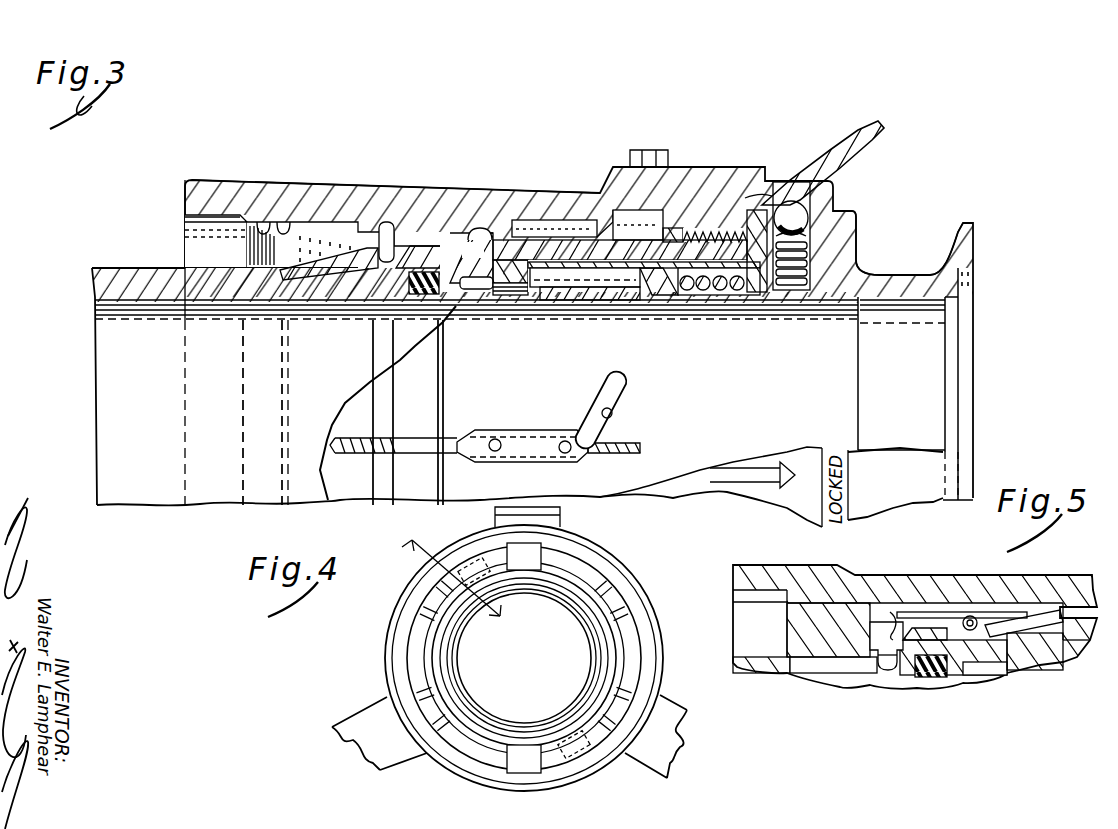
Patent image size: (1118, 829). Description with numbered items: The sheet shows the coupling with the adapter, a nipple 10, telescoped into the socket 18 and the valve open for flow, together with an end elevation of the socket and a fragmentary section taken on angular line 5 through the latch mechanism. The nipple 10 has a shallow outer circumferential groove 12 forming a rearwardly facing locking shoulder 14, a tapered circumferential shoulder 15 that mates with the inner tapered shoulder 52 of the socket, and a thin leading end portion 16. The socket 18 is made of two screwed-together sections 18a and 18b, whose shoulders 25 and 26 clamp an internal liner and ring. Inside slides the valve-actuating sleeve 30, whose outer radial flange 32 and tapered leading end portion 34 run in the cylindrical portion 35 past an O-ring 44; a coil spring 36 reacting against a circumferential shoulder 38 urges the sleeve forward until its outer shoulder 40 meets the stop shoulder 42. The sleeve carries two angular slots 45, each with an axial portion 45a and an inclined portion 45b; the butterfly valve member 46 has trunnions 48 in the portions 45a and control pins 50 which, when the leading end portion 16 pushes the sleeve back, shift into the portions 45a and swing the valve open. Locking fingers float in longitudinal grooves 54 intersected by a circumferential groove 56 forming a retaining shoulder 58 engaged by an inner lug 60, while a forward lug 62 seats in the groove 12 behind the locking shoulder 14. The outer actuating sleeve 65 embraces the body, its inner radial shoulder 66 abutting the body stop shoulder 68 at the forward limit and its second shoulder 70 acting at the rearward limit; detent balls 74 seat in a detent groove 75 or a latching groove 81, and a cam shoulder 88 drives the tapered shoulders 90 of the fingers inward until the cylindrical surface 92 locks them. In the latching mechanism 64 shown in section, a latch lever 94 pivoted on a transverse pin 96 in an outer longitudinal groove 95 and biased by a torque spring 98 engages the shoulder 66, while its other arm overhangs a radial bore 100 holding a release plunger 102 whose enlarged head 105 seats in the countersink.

In FIG. 3, the nipple 10 is at (132, 266).
In FIG. 3, the outer circumferential groove 12 is at (257, 295).
In FIG. 3, the locking shoulder 14 is at (288, 298).
In FIG. 3, the tapered circumferential shoulder 15 is at (380, 312).
In FIG. 3, the leading end portion 16 is at (423, 313).
In FIG. 3, the socket 18 is at (857, 214).
In FIG. 4, the socket 18 is at (606, 571).
In FIG. 5, the socket 18 is at (838, 663).
In FIG. 3, the body section 18a is at (858, 250).
In FIG. 3, the body section 18b is at (552, 248).
In FIG. 5, the body section 18b is at (1065, 655).
In FIG. 3, the shoulder 25 is at (717, 265).
In FIG. 3, the opposing shoulder 26 is at (510, 295).
In FIG. 3, the valve-actuating sleeve 30 is at (567, 300).
In FIG. 3, the outer radial flange 32 is at (658, 287).
In FIG. 3, the leading end portion 34 is at (458, 300).
In FIG. 3, the cylindrical portion 35 is at (466, 277).
In FIG. 3, the coil spring 36 is at (717, 295).
In FIG. 3, the circumferential shoulder 38 is at (752, 283).
In FIG. 3, the outer circumferential shoulder 40 is at (553, 279).
In FIG. 3, the inner circumferential stop shoulder 42 is at (450, 292).
In FIG. 3, the O-ring 44 is at (425, 272).
In FIG. 5, the O-ring 44 is at (922, 677).
In FIG. 3, the slots 45 is at (579, 422).
In FIG. 3, the slot portion 45a is at (530, 430).
In FIG. 3, the second slot portion 45b is at (612, 414).
In FIG. 3, the butterfly valve member 46 is at (453, 440).
In FIG. 3, the trunnions 48 is at (495, 452).
In FIG. 3, the control pins 50 is at (566, 453).
In FIG. 3, the inner circumferential tapered shoulder 52 is at (430, 262).
In FIG. 5, the inner circumferential tapered shoulder 52 is at (908, 640).
In FIG. 3, the longitudinal grooves 54 is at (342, 245).
In FIG. 3, the circumferential groove 56 is at (362, 300).
In FIG. 3, the retaining shoulder 58 is at (330, 300).
In FIG. 3, the lug 60 is at (387, 225).
In FIG. 3, the radially inwardly extending lug 62 is at (265, 262).
In FIG. 5, the latching mechanism 64 is at (971, 616).
In FIG. 3, the outer actuating sleeve 65 is at (257, 175).
In FIG. 5, the outer actuating sleeve 65 is at (788, 562).
In FIG. 3, the inner radial shoulder 66 is at (555, 222).
In FIG. 5, the inner radial shoulder 66 is at (1068, 600).
In FIG. 3, the circumferential stop shoulder 68 is at (473, 230).
In FIG. 3, the second inner shoulder 70 is at (618, 208).
In FIG. 3, the detent balls 74 is at (799, 222).
In FIG. 3, the inner circumferential detent groove 75 is at (803, 208).
In FIG. 3, the second inner circumferential latching groove 81 is at (753, 192).
In FIG. 3, the tapered inner circumferential cam shoulder 88 is at (263, 225).
In FIG. 3, the tapered shoulders 90 is at (322, 235).
In FIG. 3, the second inner cylindrical surface 92 is at (283, 230).
In FIG. 5, the latch lever 94 is at (1025, 615).
In FIG. 5, the outer longitudinal groove 95 is at (1040, 633).
In FIG. 5, the transverse pivot pin 96 is at (973, 655).
In FIG. 5, the torque spring 98 is at (945, 612).
In FIG. 5, the radial bore 100 is at (893, 618).
In FIG. 5, the release plunger 102 is at (887, 662).
In FIG. 5, the enlarged head 105 is at (872, 636).
In FIG. 4, the angular line 5— 5 is at (468, 564).